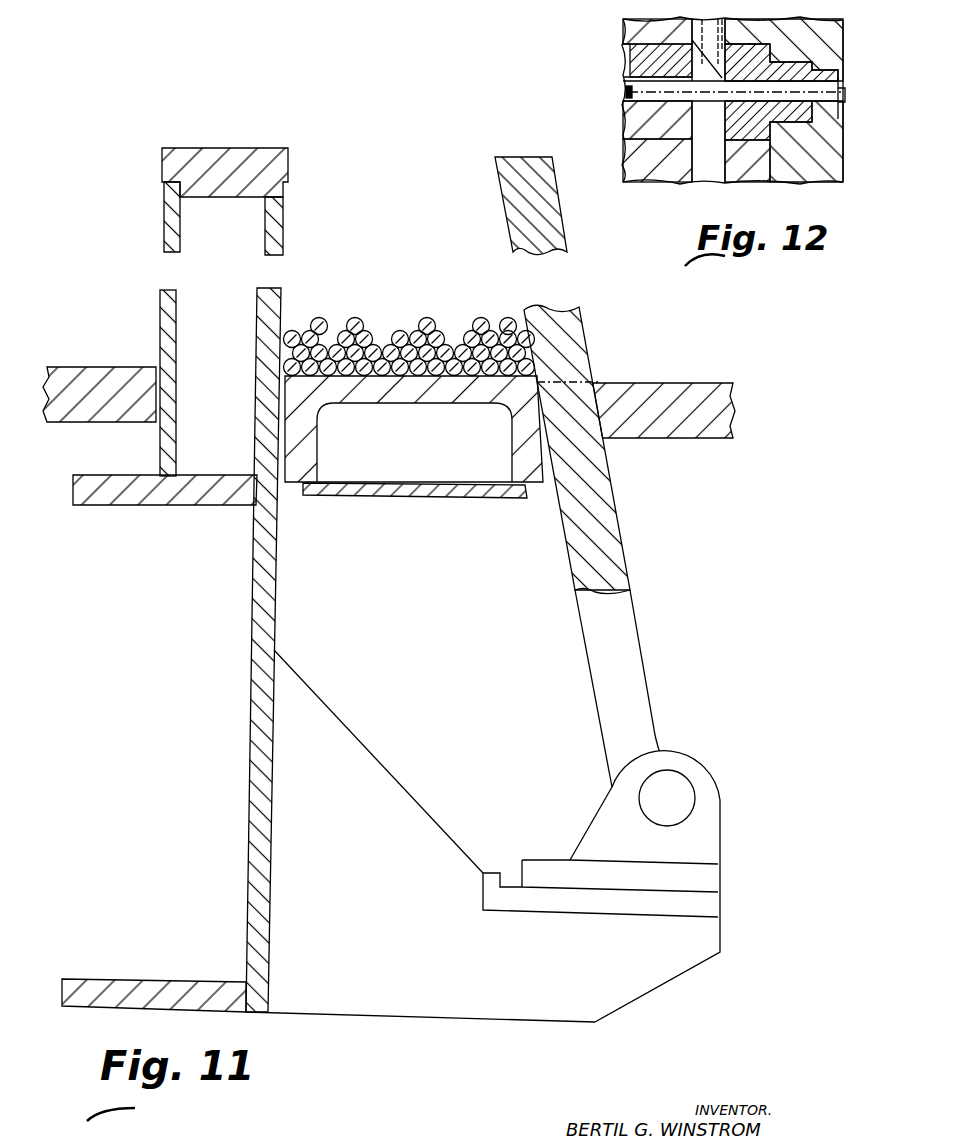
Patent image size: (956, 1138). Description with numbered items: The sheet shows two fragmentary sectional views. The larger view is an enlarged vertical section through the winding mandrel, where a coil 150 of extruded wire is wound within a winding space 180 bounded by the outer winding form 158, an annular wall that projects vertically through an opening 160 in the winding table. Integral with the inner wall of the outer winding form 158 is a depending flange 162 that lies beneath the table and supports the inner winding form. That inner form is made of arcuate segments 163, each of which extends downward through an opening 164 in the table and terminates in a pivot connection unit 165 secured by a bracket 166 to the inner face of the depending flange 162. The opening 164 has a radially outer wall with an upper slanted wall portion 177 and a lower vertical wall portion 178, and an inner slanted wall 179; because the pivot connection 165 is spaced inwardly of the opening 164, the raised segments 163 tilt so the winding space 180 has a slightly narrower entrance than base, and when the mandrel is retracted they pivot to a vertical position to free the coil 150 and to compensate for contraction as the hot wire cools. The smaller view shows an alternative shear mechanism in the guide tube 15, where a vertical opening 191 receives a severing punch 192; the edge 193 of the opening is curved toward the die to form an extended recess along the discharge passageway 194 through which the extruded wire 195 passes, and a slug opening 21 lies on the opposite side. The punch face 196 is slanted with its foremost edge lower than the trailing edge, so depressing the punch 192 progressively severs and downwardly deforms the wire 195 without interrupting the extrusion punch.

In FIG. 12, the guide tube 15 is at (632, 128).
In FIG. 12, the slug opening 21 is at (722, 172).
In FIG. 11, the coil 150 is at (422, 332).
In FIG. 11, the outer winding form 158 is at (163, 290).
In FIG. 11, the opening 160 is at (162, 380).
In FIG. 11, the depending flange 162 is at (248, 900).
In FIG. 11, the arcuate segment 163 is at (526, 160).
In FIG. 11, the opening 164 is at (610, 432).
In FIG. 11, the pivot connection unit 165 is at (706, 772).
In FIG. 11, the bracket 166 is at (343, 1002).
In FIG. 11, the upper slanted wall portion 177 is at (538, 382).
In FIG. 11, the lower vertical wall portion 178 is at (530, 490).
In FIG. 11, the inner slanted wall 179 is at (598, 383).
In FIG. 11, the winding space 180 is at (403, 237).
In FIG. 12, the vertical opening 191 is at (704, 65).
In FIG. 12, the severing punch 192 is at (693, 27).
In FIG. 12, the edge 193 is at (682, 103).
In FIG. 12, the discharge passageway 194 is at (630, 100).
In FIG. 12, the extruded wire 195 is at (628, 92).
In FIG. 12, the punch face 196 is at (690, 78).